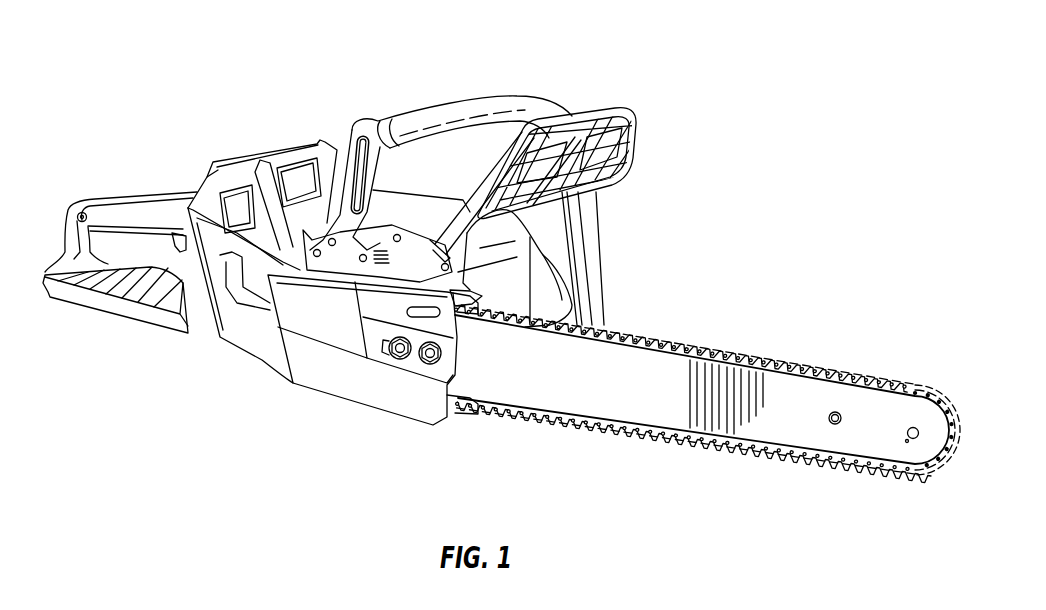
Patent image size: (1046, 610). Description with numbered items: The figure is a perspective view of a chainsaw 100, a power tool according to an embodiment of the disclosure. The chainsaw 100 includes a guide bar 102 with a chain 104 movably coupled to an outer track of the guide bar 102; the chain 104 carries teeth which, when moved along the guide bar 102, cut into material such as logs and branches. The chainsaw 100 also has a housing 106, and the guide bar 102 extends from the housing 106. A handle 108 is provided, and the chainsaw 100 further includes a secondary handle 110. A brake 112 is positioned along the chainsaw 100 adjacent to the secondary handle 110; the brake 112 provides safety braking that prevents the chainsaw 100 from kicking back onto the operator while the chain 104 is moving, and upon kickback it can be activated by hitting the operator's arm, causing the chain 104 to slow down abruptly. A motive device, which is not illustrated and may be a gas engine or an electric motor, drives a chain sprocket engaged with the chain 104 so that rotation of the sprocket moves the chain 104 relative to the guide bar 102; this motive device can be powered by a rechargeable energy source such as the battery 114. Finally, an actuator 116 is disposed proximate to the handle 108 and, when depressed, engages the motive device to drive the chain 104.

The chainsaw 100 is at (812, 126).
The guide bar 102 is at (805, 400).
The chain 104 is at (746, 452).
The housing 106 is at (229, 326).
The handle 108 is at (128, 204).
The secondary handle 110 is at (436, 113).
The brake 112 is at (632, 120).
The battery 114 is at (268, 152).
The actuator 116 is at (173, 238).